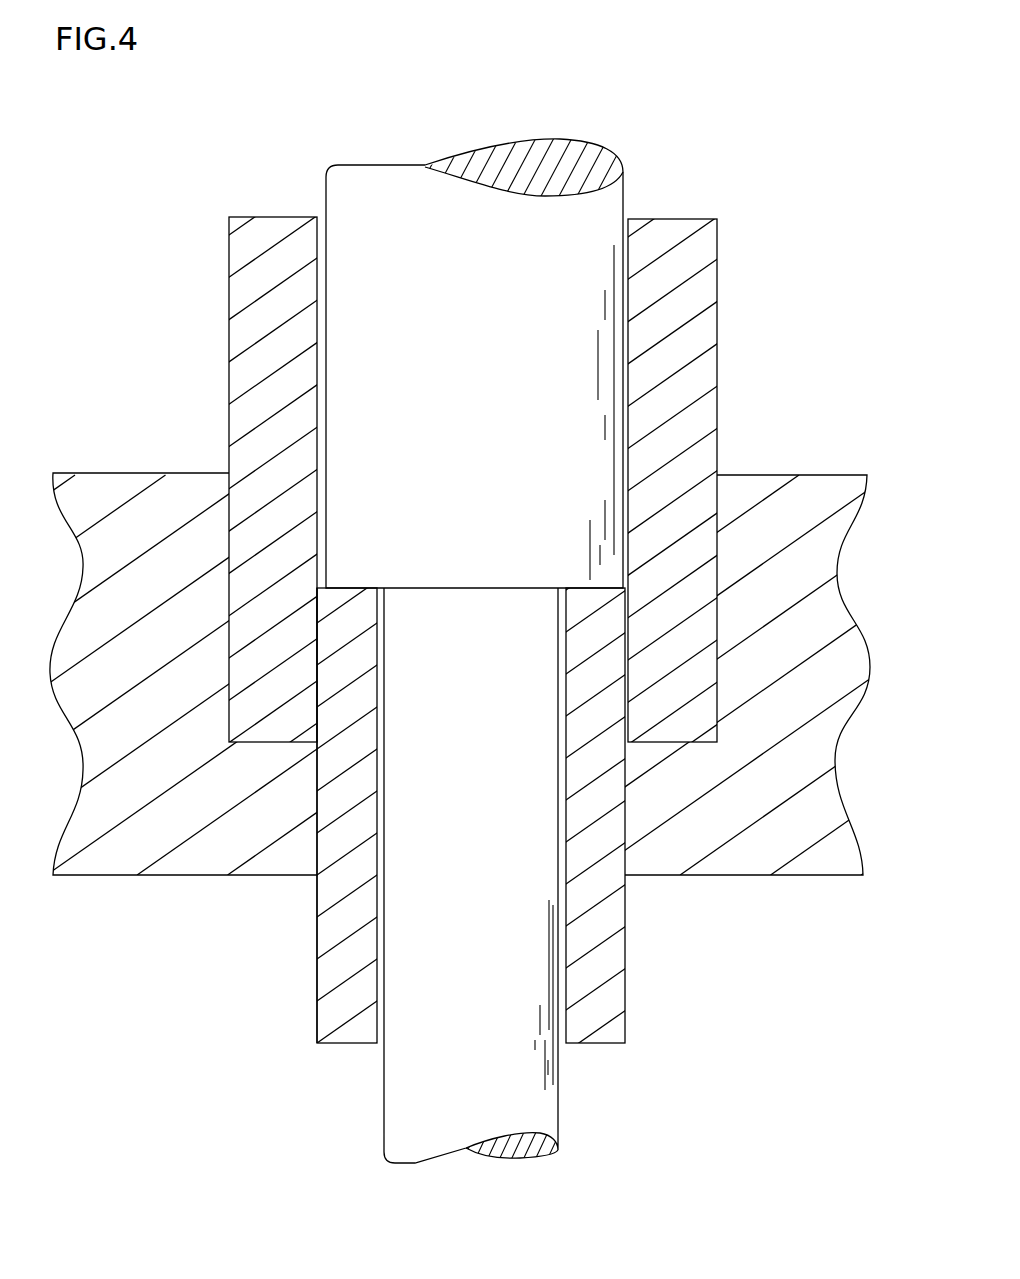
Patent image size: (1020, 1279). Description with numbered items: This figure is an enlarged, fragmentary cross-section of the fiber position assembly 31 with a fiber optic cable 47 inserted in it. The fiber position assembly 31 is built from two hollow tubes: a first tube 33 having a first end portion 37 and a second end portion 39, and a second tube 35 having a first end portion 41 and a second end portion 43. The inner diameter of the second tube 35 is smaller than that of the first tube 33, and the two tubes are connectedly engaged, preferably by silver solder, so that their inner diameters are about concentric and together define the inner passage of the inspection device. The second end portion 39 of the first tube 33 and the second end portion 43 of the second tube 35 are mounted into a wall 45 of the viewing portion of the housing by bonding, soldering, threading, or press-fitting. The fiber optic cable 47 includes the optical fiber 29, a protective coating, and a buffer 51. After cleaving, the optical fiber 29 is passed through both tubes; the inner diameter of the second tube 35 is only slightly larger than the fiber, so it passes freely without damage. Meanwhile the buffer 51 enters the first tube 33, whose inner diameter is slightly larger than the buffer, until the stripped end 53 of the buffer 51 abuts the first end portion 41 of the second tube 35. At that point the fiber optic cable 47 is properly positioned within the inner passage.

The optical fiber 29 is at (538, 1116).
The fiber position assembly 31 is at (132, 330).
The first tube 33 is at (724, 363).
The second tube 35 is at (310, 867).
The first end portion of the first tube 37 is at (227, 647).
The second end portion of the first tube 39 is at (707, 288).
The first end portion of the second tube 41 is at (317, 697).
The second end portion of the second tube 43 is at (325, 991).
The wall 45 is at (808, 500).
The fiber optic cable 47 is at (660, 123).
The buffer 51 is at (600, 214).
The end of the buffer 53 is at (468, 612).